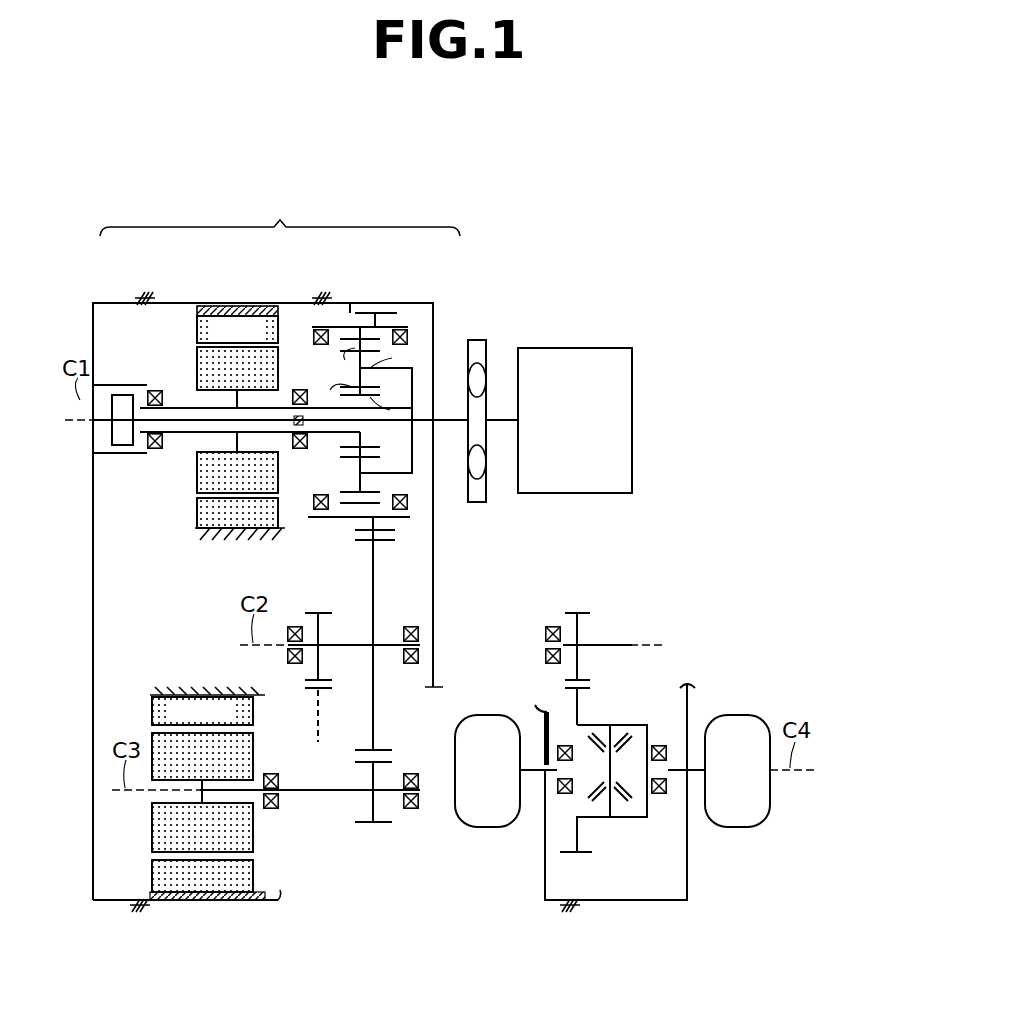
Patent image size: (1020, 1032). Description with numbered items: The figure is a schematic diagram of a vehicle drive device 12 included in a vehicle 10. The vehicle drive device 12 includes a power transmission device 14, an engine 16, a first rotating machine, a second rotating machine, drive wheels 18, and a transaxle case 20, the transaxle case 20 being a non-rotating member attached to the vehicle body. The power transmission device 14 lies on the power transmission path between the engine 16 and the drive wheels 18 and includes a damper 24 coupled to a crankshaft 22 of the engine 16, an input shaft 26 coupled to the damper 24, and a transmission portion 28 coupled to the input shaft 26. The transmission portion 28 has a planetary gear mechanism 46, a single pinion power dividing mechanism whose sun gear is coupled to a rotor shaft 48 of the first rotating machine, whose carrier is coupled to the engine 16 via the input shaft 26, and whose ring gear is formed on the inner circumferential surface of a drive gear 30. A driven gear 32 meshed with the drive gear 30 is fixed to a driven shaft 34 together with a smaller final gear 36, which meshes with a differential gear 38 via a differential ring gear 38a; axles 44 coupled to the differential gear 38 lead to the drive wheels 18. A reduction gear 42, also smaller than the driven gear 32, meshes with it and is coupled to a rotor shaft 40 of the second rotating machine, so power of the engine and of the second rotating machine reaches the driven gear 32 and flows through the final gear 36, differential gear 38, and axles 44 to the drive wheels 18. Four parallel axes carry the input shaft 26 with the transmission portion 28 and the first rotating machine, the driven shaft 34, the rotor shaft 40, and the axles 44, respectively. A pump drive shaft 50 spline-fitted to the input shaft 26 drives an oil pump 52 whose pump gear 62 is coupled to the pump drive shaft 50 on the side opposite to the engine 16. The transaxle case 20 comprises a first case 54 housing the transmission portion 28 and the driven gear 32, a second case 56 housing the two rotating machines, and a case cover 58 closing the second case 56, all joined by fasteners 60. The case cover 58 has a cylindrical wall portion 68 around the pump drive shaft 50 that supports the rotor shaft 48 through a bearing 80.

The vehicle 10 is at (485, 180).
The vehicle drive device 12 is at (605, 277).
The power transmission device 14 is at (272, 962).
The engine 16 is at (562, 494).
The drive wheels 18 is at (486, 828).
The transaxle case 20 is at (280, 216).
The crankshaft 22 is at (498, 425).
The damper 24 is at (475, 340).
The input shaft 26 is at (446, 425).
The transmission portion 28 is at (298, 291).
The drive gear 30 is at (352, 525).
The driven gear 32 is at (380, 540).
The driven shaft 34 is at (328, 643).
The final gear 36 is at (328, 680).
The differential gear 38 is at (618, 848).
The differential ring gear 38a is at (322, 692).
The rotor shaft 40 is at (300, 788).
The reduction gear 42 is at (362, 822).
The axles 44 is at (528, 775).
The planetary gear mechanism 46 is at (351, 303).
The rotor shaft 48 is at (177, 406).
The pump drive shaft 50 is at (176, 434).
The oil pump 52 is at (123, 455).
The first case 54 is at (418, 303).
The second case 56 is at (176, 303).
The case cover 58 is at (96, 303).
The fasteners 60 is at (140, 297).
The pump gear 62 is at (112, 430).
The wall portion 68 is at (128, 384).
The bearing 80 is at (158, 390).